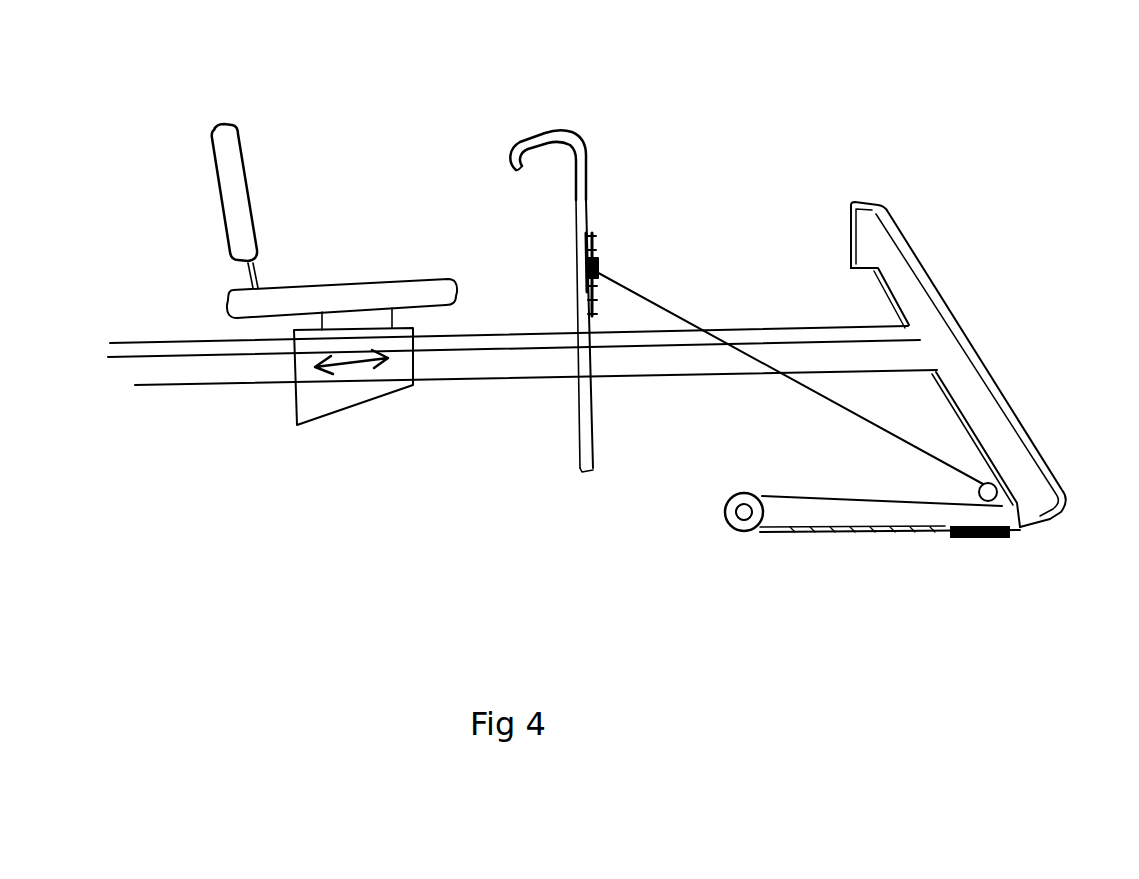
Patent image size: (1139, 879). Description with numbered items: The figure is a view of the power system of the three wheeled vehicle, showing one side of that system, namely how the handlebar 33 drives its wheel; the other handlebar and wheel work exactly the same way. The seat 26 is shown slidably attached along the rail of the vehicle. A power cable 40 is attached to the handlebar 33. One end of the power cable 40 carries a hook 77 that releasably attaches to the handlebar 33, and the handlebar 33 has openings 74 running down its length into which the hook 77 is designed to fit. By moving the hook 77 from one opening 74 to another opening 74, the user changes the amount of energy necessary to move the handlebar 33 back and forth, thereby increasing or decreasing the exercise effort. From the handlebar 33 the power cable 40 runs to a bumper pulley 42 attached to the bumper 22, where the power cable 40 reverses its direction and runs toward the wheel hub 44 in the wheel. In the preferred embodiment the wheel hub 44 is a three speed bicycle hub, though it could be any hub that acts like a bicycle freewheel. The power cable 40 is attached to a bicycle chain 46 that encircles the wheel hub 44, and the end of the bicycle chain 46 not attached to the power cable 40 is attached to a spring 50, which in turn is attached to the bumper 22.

The bumper 22 is at (912, 295).
The seat 26 is at (228, 187).
The handlebar 33 is at (570, 138).
The power cable 40 is at (737, 381).
The bumper pulley 42 is at (1000, 488).
The wheel hub 44 is at (762, 531).
The bicycle chain 46 is at (825, 533).
The spring 50 is at (970, 540).
The openings 74 is at (593, 310).
The hook 77 is at (596, 268).